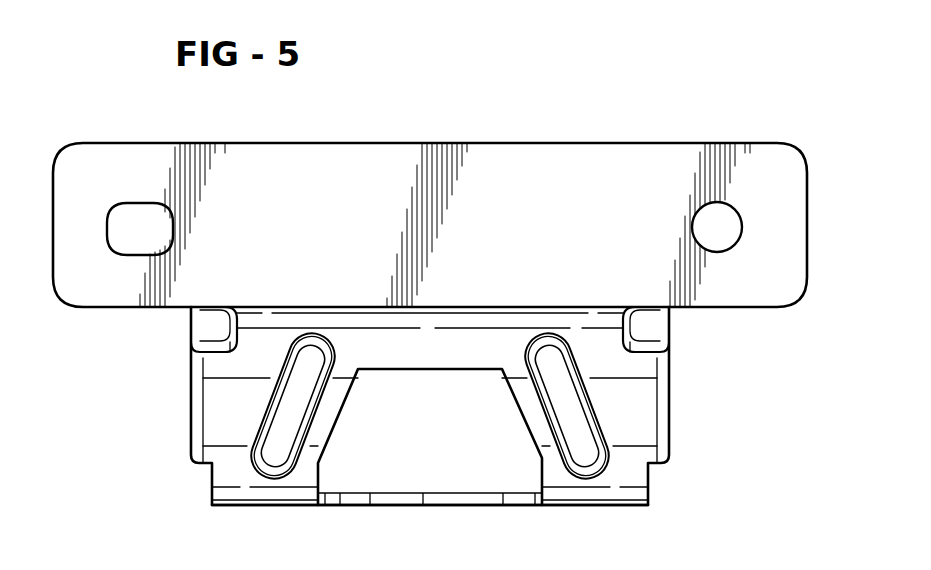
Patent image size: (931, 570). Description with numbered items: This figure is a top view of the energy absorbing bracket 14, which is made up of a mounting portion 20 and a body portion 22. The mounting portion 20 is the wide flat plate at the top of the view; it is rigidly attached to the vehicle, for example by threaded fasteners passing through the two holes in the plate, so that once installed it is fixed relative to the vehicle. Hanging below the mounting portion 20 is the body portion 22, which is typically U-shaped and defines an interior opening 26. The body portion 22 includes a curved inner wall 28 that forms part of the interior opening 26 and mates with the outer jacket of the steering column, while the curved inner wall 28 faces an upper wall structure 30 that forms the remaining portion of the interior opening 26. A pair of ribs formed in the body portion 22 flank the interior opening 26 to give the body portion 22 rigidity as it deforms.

The energy absorbing bracket 14 is at (757, 358).
The mounting portion 20 is at (610, 165).
The body portion 22 is at (650, 455).
The interior opening 26 is at (401, 451).
The curved inner wall 28 is at (468, 497).
The upper wall structure 30 is at (437, 350).